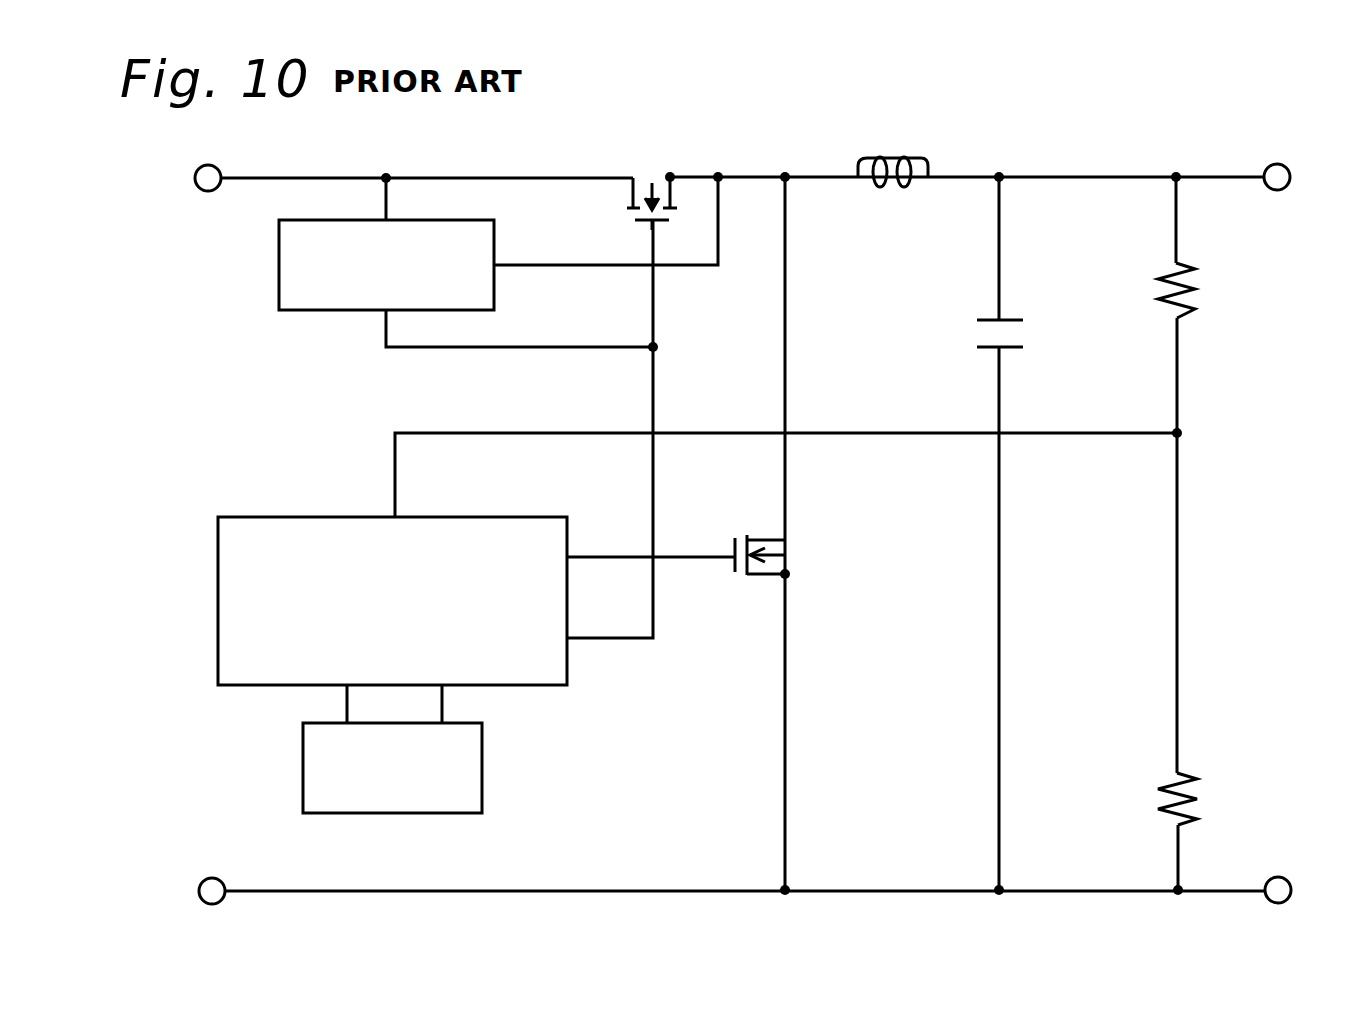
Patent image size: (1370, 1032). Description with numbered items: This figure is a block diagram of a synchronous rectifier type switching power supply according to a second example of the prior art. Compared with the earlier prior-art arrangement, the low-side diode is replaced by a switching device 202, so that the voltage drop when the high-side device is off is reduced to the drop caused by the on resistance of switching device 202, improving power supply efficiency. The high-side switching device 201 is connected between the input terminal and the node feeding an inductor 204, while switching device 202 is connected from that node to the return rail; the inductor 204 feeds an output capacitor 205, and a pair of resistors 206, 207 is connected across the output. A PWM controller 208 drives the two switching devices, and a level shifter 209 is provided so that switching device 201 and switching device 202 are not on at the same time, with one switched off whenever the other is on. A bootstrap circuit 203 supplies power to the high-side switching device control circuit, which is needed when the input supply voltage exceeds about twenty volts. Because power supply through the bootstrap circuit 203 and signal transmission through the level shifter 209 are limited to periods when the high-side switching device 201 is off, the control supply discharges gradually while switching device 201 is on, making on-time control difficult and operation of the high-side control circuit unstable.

The switching device 201 is at (653, 168).
The switching device 202 is at (790, 548).
The bootstrap circuit 203 is at (315, 313).
The inductor 204 is at (893, 155).
The output capacitor 205 is at (1030, 332).
The feedback resistor 206 is at (1202, 290).
The feedback resistor 207 is at (1200, 800).
The PWM controller 208 is at (508, 514).
The level shifter 209 is at (443, 815).